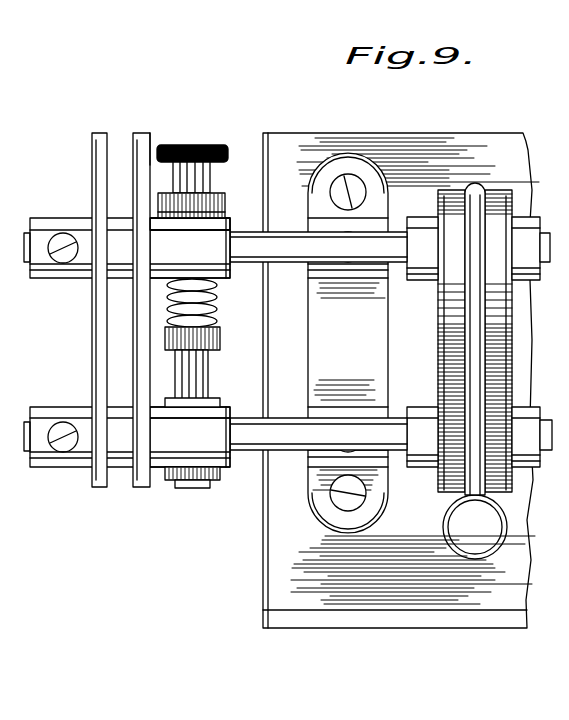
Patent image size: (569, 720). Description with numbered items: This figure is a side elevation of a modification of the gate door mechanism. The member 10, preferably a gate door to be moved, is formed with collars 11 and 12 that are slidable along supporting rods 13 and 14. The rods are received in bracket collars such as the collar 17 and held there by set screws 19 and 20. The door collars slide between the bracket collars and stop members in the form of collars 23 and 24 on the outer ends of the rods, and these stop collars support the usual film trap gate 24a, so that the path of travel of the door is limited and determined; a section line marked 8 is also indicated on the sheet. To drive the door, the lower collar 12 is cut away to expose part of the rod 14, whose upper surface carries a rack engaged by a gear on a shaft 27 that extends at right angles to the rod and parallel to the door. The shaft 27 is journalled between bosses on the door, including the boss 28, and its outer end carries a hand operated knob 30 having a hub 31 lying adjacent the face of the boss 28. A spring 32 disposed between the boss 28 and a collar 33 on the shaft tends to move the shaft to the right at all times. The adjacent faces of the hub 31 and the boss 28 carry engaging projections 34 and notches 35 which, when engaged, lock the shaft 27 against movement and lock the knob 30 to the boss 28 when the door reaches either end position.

The section line 8- 8 is at (10, 260).
The member 10 is at (140, 352).
The collar 11 is at (232, 220).
The collar 12 is at (232, 412).
The rod 13 is at (250, 262).
The rod 14 is at (250, 452).
The collar 17 is at (322, 238).
The set screw 19 is at (350, 246).
The set screw 20 is at (346, 436).
The collar 23 is at (50, 218).
The collar 24 is at (50, 407).
The film trap gate 24a is at (95, 330).
The shaft 27 is at (208, 372).
The boss 28 is at (228, 210).
The knob 30 is at (225, 143).
The hub 31 is at (152, 150).
The spring 32 is at (217, 316).
The collar 33 is at (220, 340).
The projections 34 is at (200, 206).
The notches 35 is at (185, 210).